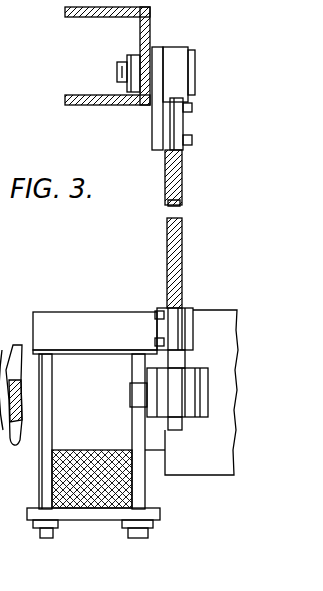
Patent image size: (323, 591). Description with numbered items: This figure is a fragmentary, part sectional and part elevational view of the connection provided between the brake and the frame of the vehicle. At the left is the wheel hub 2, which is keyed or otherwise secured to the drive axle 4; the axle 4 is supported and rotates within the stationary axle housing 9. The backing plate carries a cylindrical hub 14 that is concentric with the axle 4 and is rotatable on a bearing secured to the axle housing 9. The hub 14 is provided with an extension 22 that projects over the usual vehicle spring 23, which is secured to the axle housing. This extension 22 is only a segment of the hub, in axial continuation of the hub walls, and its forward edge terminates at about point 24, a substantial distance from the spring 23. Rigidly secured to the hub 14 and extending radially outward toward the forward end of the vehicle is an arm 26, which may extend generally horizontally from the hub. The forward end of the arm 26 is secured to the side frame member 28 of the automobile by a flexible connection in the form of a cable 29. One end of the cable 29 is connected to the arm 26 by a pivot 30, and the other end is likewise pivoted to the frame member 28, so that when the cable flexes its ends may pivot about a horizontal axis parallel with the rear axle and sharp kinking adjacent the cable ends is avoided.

The wheel hub 2 is at (0, 318).
The drive axle 4 is at (0, 336).
The axle housing 9 is at (33, 442).
The cylindrical hub 14 is at (221, 318).
The extension 22 is at (66, 318).
The vehicle spring 23 is at (101, 506).
The forward edge point of the segmental extension 24 is at (96, 350).
The arm 26 is at (175, 380).
The side frame member 28 is at (150, 27).
The cable 29 is at (183, 173).
The pivot 30 is at (195, 68).